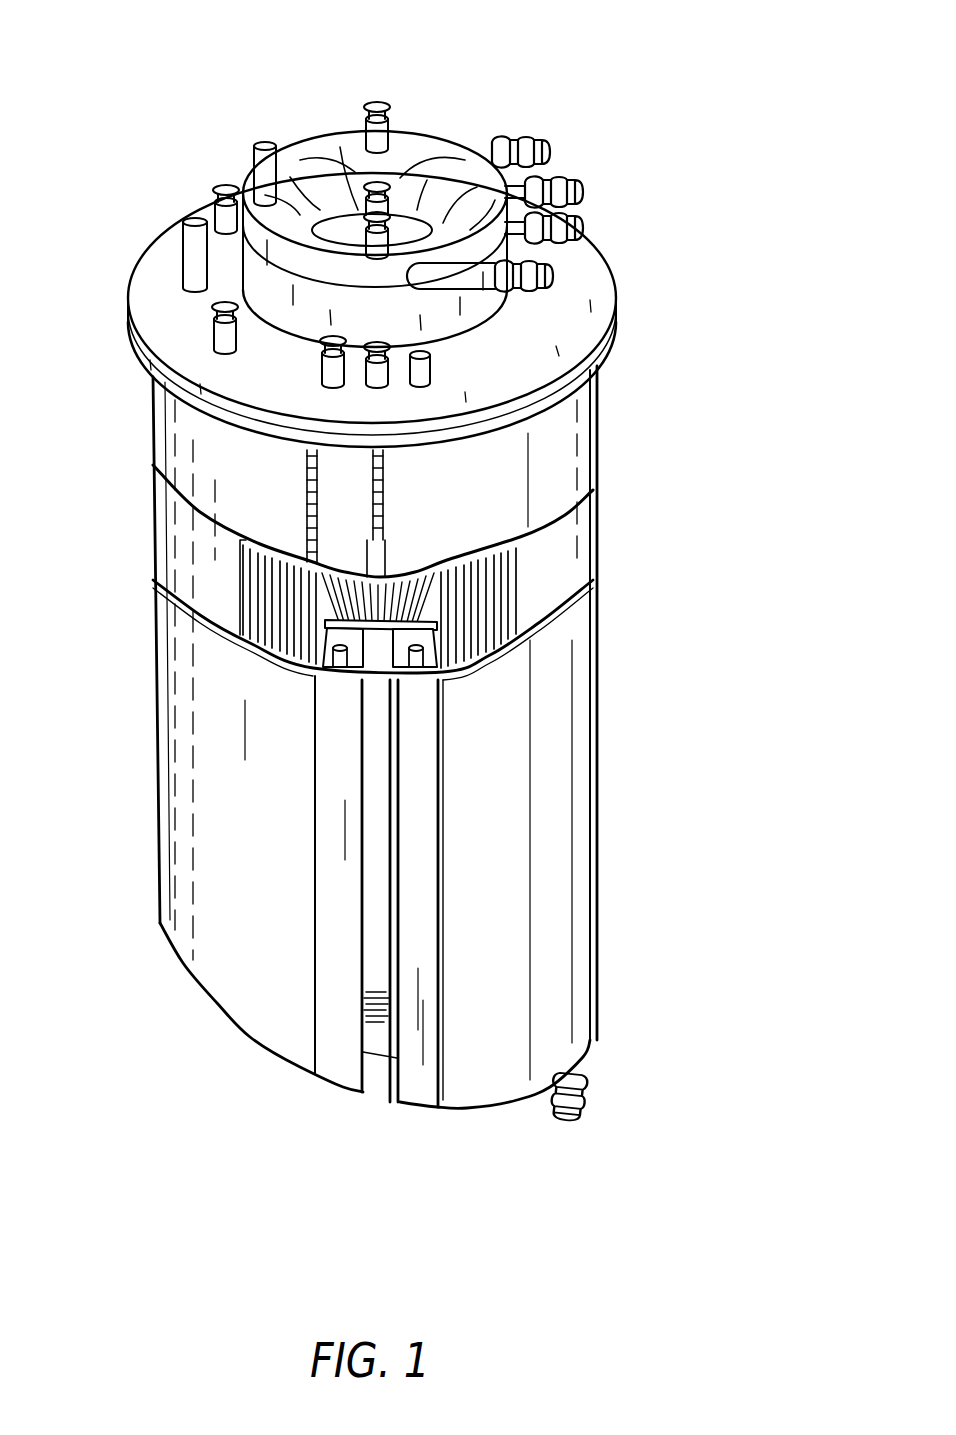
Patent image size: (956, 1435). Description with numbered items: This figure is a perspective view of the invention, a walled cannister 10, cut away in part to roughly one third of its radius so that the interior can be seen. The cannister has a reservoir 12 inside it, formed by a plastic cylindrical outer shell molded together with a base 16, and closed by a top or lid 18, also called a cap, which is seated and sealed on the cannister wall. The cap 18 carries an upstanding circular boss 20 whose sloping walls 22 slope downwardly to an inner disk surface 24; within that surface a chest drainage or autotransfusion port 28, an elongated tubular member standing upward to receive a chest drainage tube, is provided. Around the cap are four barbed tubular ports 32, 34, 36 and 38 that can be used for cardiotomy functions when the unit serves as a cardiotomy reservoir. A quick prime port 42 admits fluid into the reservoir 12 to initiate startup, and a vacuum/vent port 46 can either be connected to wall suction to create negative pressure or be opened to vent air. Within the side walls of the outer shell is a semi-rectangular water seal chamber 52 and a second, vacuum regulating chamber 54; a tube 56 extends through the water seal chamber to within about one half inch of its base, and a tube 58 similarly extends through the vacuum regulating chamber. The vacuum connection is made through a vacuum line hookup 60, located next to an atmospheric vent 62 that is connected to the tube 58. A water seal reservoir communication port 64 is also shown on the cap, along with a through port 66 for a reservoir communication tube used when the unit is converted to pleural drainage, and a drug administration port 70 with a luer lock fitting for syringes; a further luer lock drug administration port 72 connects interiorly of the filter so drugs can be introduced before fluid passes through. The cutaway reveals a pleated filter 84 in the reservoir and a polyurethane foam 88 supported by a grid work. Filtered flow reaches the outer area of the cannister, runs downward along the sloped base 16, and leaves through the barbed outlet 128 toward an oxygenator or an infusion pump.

The walled cannister 10 is at (617, 718).
The reservoir 12 is at (597, 533).
The base 16 is at (247, 1037).
The top or lid 18 is at (573, 300).
The upstanding circular boss 20 is at (438, 136).
The sloping walls 22 is at (323, 168).
The inner disk surface 24 is at (418, 220).
The chest drainage or autotransfusion port 28 is at (383, 187).
The barbed tubular port 32 is at (484, 136).
The barbed tubular port 34 is at (562, 185).
The barbed tubular port 36 is at (576, 224).
The barbed tubular port 38 is at (590, 246).
The quick prime port 42 is at (267, 142).
The vacuum/vent port 46 is at (175, 242).
The water seal chamber 52 is at (348, 680).
The vacuum regulating chamber 54 is at (418, 680).
The tube 56 is at (343, 668).
The tube 58 is at (420, 668).
The vacuum line hookup 60 is at (378, 344).
The atmospheric vent 62 is at (432, 392).
The water seal reservoir communication port 64 is at (320, 377).
The through port 66 is at (212, 347).
The drug administration port 70 is at (227, 188).
The luer lock drug administration port 72 is at (372, 255).
The pleated filter 84 is at (522, 595).
The polyurethane foam 88 is at (408, 568).
The outlet 128 is at (568, 1118).